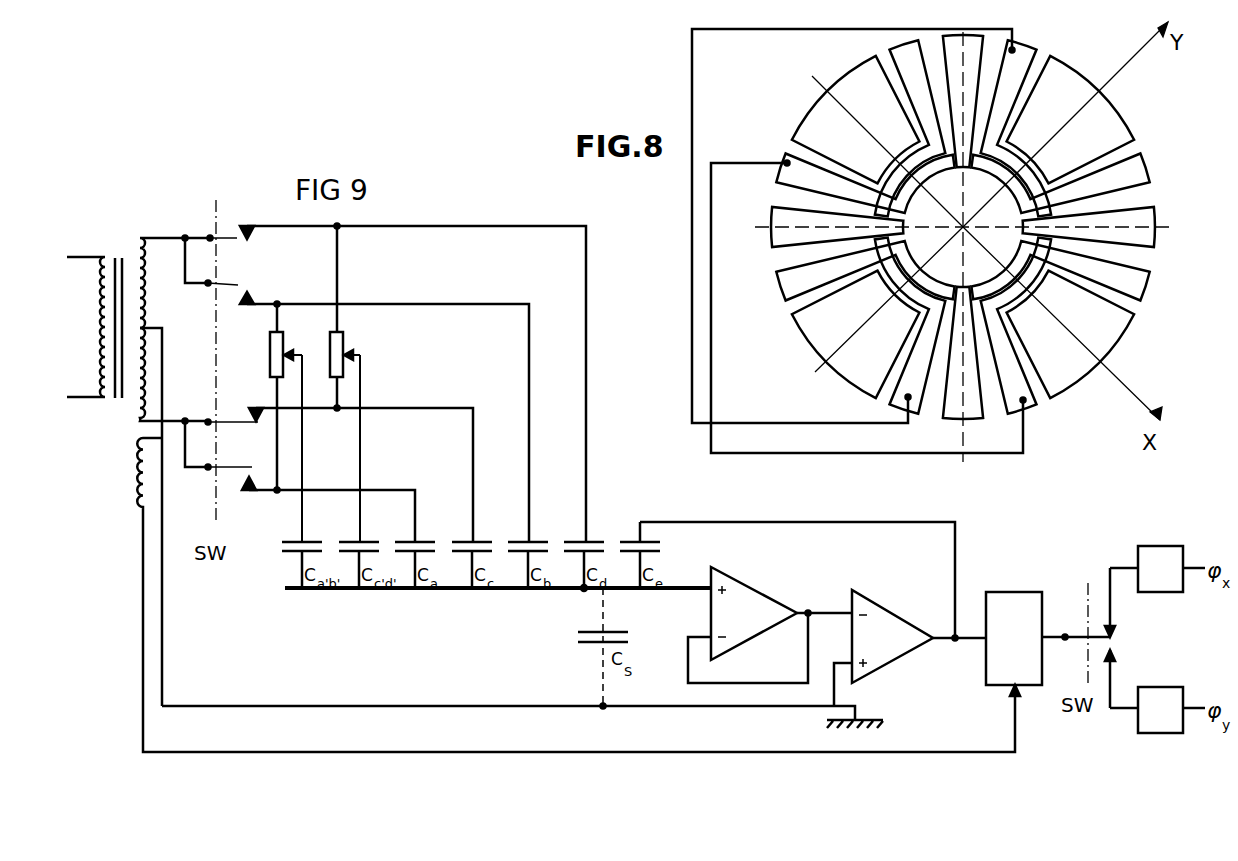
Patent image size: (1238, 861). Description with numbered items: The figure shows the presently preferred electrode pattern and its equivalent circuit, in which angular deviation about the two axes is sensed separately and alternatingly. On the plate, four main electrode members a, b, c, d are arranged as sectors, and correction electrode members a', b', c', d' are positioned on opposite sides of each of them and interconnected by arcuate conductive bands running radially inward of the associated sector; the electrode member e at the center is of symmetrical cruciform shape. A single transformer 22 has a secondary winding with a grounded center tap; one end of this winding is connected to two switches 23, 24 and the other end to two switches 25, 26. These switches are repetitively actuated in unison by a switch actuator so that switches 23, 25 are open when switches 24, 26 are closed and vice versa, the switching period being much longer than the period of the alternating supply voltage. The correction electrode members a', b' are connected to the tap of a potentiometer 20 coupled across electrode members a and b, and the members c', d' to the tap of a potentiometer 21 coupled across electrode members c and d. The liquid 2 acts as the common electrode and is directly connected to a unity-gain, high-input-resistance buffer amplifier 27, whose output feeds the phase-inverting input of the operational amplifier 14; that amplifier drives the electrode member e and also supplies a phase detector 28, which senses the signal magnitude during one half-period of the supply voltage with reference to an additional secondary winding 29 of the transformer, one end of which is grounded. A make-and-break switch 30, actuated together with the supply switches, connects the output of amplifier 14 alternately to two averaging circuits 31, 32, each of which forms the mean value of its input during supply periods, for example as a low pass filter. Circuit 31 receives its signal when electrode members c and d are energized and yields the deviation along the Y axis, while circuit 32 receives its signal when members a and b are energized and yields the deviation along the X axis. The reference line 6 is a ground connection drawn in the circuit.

In FIG. 9, the liquid 2 is at (352, 592).
In FIG. 9, the reference line 6 is at (271, 706).
In FIG. 9, the operational amplifier 14 is at (889, 619).
In FIG. 9, the potentiometer 20 is at (288, 346).
In FIG. 9, the potentiometer 21 is at (348, 346).
In FIG. 9, the transformer 22 is at (120, 253).
In FIG. 9, the switch 23 is at (232, 235).
In FIG. 9, the switch 24 is at (238, 283).
In FIG. 9, the switch 25 is at (235, 414).
In FIG. 9, the switch 26 is at (245, 467).
In FIG. 9, the buffer amplifier 27 is at (744, 593).
In FIG. 9, the phase detector 28 is at (1004, 598).
In FIG. 9, the additional secondary winding 29 is at (133, 475).
In FIG. 9, the make-and-break switch 30 is at (1082, 637).
In FIG. 9, the averaging circuit 31 is at (1148, 551).
In FIG. 9, the averaging circuit 32 is at (1161, 727).
In FIG. 8, the electrode member a is at (1071, 339).
In FIG. 8, the correction electrode member a' is at (1016, 335).
In FIG. 8, the electrode member b is at (850, 119).
In FIG. 8, the correction electrode member b' is at (903, 122).
In FIG. 8, the electrode member c is at (1071, 117).
In FIG. 8, the correction electrode member c' is at (1070, 176).
In FIG. 8, the electrode member d is at (856, 340).
In FIG. 8, the correction electrode member d' is at (852, 271).
In FIG. 8, the electrode member e is at (1150, 240).